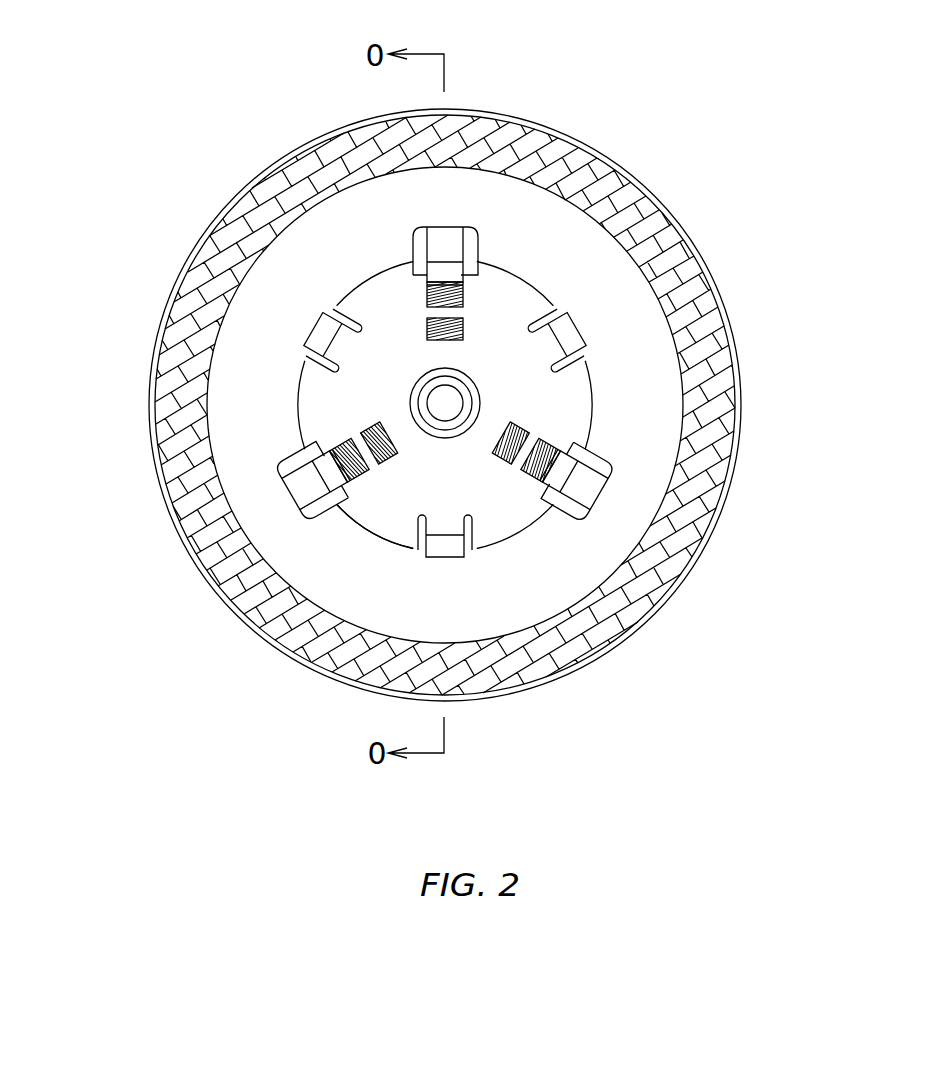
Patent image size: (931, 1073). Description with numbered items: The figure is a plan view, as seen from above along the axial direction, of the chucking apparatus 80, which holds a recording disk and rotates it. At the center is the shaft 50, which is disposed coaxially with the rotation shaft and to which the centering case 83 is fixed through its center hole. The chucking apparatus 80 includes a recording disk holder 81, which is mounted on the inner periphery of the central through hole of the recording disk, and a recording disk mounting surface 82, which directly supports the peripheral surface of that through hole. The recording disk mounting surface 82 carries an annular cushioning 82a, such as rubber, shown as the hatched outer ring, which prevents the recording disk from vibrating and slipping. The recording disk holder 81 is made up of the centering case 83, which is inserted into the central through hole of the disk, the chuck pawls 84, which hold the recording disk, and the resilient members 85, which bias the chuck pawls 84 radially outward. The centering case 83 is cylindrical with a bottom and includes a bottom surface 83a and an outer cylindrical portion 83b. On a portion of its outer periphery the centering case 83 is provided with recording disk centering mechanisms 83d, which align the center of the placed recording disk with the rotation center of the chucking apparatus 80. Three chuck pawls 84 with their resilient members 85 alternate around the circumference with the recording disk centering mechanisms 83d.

The shaft 50 is at (444, 404).
The chucking apparatus 80 is at (144, 290).
The recording disk holder 81 is at (612, 331).
The recording disk mounting surface 82 is at (491, 405).
The annular cushioning 82a is at (607, 610).
The centering case 83 is at (319, 395).
The bottom surface 83a is at (407, 488).
The outer cylindrical portion 83b is at (363, 530).
The recording disk centering mechanisms 83d is at (453, 547).
The chuck pawls 84 is at (633, 466).
The resilient members 85 is at (457, 297).